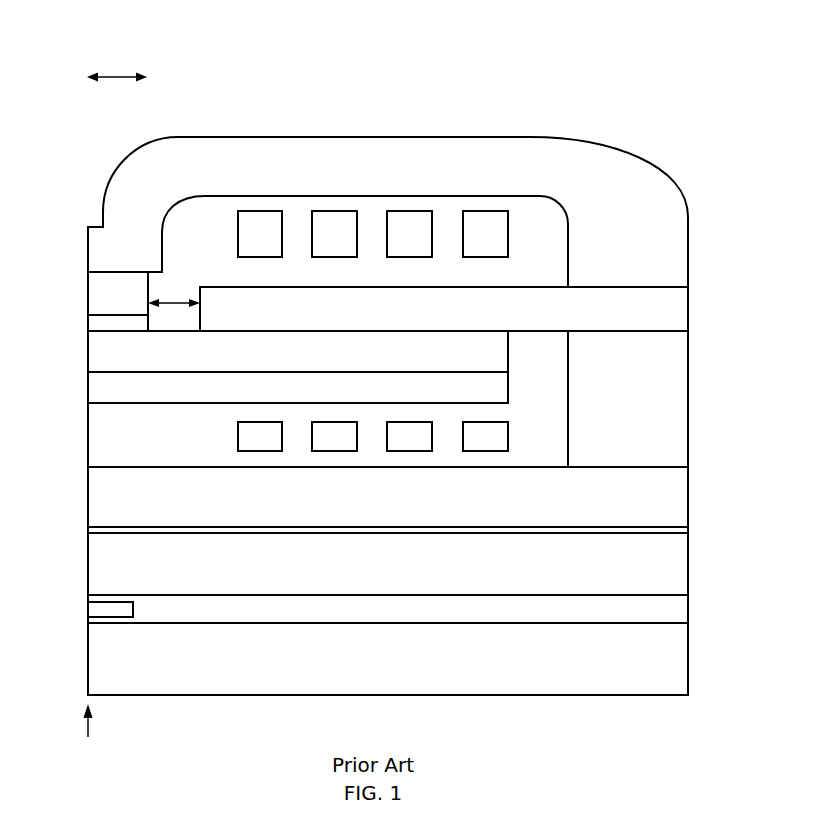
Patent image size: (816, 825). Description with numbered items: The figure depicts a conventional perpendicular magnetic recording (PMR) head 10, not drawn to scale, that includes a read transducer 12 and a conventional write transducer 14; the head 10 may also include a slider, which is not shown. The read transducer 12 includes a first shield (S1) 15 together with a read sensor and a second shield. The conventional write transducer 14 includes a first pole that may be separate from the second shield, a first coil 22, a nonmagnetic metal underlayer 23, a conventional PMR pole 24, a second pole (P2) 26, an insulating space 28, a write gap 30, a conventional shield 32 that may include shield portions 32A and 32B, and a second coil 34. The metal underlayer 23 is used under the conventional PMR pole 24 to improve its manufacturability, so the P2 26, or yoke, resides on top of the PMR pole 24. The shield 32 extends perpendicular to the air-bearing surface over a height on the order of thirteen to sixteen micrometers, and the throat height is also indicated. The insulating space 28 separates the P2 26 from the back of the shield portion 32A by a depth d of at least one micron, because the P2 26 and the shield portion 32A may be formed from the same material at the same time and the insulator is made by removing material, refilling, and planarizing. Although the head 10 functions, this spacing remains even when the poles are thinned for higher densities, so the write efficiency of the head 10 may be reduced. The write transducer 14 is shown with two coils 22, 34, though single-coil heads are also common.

The conventional perpendicular magnetic recording (PMR) head 10 is at (401, 61).
The read transducer 12 is at (750, 615).
The conventional write transducer 14 is at (750, 332).
The first shield (S1) 15 is at (688, 660).
The first coil 22 is at (88, 477).
The metal underlayer 23 is at (88, 398).
The conventional PMR pole 24 is at (88, 368).
The second pole (P2) 26 is at (203, 438).
The insulating space 28 is at (179, 275).
The write gap 30 is at (88, 328).
The conventional shield 32 is at (243, 117).
The shield portion 32A is at (88, 277).
The shield portion 32B is at (108, 193).
The second coil 34 is at (542, 229).